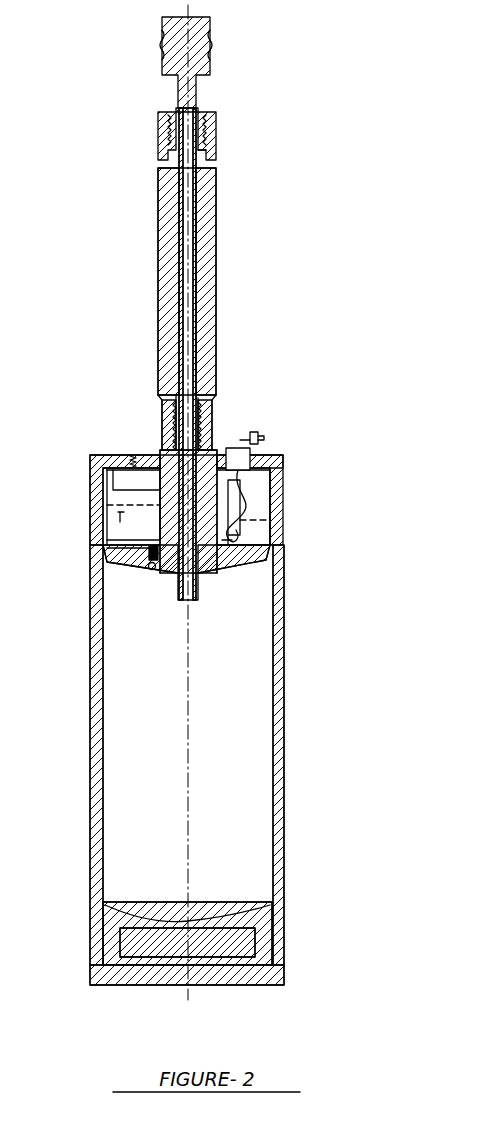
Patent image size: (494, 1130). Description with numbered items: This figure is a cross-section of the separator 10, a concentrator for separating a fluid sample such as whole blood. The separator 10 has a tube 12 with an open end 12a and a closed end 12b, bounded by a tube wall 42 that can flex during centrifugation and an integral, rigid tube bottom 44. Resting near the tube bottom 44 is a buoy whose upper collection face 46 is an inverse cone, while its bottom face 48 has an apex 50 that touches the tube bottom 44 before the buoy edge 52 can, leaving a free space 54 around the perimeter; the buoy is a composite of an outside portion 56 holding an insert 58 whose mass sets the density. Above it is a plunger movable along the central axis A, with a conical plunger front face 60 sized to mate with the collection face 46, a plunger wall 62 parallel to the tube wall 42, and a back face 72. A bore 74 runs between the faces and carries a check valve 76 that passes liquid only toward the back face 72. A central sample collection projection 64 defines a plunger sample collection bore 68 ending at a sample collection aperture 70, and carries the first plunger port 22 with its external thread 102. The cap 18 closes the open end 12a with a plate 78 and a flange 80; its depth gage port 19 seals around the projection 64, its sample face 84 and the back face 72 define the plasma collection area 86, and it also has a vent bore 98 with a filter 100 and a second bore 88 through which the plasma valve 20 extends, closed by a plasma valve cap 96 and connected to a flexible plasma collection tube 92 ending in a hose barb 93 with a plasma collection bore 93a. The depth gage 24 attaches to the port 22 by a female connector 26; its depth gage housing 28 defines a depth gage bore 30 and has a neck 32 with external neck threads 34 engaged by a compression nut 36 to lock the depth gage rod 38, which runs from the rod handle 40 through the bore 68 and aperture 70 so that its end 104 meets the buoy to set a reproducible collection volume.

The separator 10 is at (120, 218).
The tube 12 is at (287, 697).
The open end 12a is at (287, 466).
The closed end 12b is at (287, 970).
The cap 18 is at (100, 456).
The depth gage port 19 is at (156, 455).
The plasma valve 20 is at (248, 442).
The first plunger port 22 is at (208, 432).
The depth gage 24 is at (219, 226).
The female connector 26 is at (216, 382).
The depth gage housing 28 is at (198, 310).
The depth gage bore 30 is at (198, 270).
The neck 32 is at (208, 162).
The external neck threads 34 is at (210, 133).
The compression nut 36 is at (214, 114).
The depth gage rod 38 is at (180, 316).
The rod handle 40 is at (206, 27).
The tube wall 42 is at (283, 792).
The tube bottom 44 is at (218, 975).
The collection face 46 is at (225, 882).
The bottom face 48 is at (140, 960).
The apex 50 is at (190, 950).
The buoy edge 52 is at (108, 952).
The free space 54 is at (122, 960).
The outside portion 56 is at (262, 912).
The insert 58 is at (232, 940).
The plunger front face 60 is at (140, 580).
The plunger wall 62 is at (100, 534).
The sample collection projection 64 is at (118, 497).
The plunger sample collection bore 68 is at (225, 566).
The sample collection aperture 70 is at (200, 582).
The back face 72 is at (142, 552).
The bore 74 is at (150, 568).
The check valve 76 is at (148, 562).
The plate 78 is at (284, 462).
The flange 80 is at (266, 488).
The sample face 84 is at (126, 478).
The plasma collection area 86 is at (130, 515).
The second bore 88 is at (252, 455).
The plasma collection tube 92 is at (250, 522).
The hose barb 93 is at (262, 548).
The plasma collection bore 93a is at (272, 558).
The plasma valve cap 96 is at (266, 437).
The vent bore 98 is at (126, 462).
The filter 100 is at (134, 455).
The external thread 102 is at (178, 420).
The end 104 is at (198, 600).
The central axis A is at (188, 768).